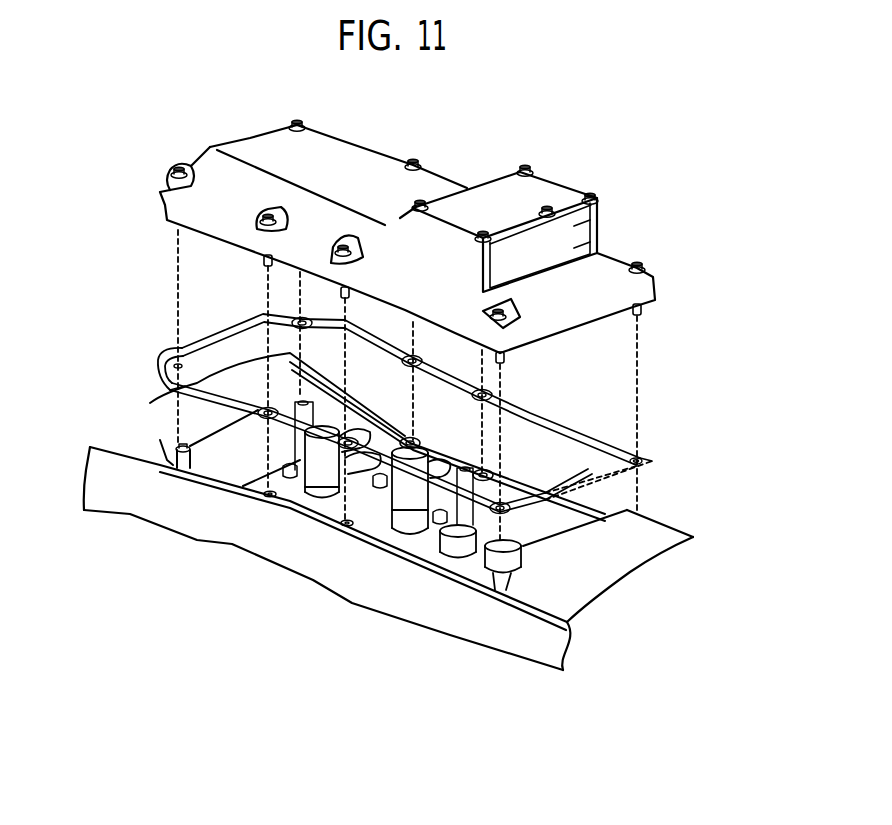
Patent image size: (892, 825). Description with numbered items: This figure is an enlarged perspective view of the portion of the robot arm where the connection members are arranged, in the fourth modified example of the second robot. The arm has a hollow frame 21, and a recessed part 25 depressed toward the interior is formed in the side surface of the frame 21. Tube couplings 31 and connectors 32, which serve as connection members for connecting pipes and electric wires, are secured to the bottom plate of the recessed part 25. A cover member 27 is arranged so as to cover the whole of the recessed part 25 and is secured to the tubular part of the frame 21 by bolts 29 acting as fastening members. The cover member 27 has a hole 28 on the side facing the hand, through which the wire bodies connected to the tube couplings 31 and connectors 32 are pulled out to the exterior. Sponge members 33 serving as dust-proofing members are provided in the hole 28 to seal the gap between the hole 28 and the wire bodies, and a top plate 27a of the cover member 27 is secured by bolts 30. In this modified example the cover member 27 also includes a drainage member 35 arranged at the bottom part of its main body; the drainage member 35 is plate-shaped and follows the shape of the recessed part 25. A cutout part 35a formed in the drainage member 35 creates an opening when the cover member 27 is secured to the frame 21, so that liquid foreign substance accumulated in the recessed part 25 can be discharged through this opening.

The frame 21 is at (118, 497).
The recessed part 25 is at (208, 463).
The cover member 27 is at (347, 160).
The top plate 27a is at (563, 198).
The hole 28 is at (515, 232).
The bolts 29 is at (268, 214).
The bolts 30 is at (525, 168).
The tube couplings 31 is at (325, 505).
The connectors 32 is at (455, 537).
The sponge members 33 is at (600, 243).
The drainage member 35 is at (590, 430).
The cutout part 35a is at (620, 470).